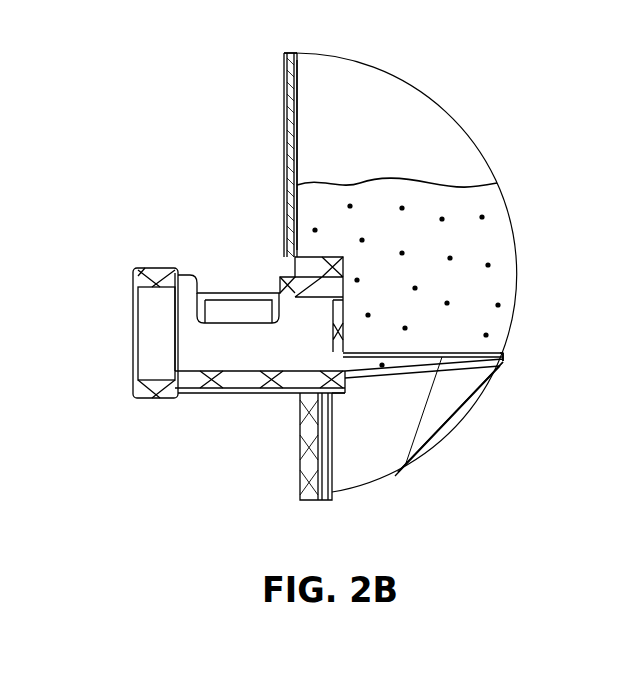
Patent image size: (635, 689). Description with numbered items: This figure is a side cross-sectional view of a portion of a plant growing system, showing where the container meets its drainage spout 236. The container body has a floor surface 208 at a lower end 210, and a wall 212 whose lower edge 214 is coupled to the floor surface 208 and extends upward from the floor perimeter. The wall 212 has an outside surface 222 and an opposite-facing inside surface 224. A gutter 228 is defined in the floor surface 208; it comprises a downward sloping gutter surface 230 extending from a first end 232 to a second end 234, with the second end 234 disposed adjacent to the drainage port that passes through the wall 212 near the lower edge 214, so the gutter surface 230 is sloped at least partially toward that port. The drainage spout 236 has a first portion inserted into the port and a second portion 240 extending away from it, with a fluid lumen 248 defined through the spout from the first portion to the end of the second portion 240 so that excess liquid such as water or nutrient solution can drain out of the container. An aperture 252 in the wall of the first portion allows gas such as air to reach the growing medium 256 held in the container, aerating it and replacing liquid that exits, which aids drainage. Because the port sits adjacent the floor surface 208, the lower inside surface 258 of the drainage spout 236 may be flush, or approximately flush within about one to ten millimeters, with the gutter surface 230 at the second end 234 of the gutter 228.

The floor surface 208 is at (495, 351).
The lower end 210 is at (522, 362).
The wall 212 is at (270, 141).
The lower edge 214 is at (420, 356).
The outside surface 222 is at (284, 53).
The inside surface 224 is at (297, 98).
The gutter 228 is at (393, 352).
The gutter surface 230 is at (442, 352).
The first end 232 is at (503, 375).
The second end 234 is at (342, 410).
The drainage spout 236 is at (198, 315).
The second portion 240 is at (140, 408).
The fluid lumen 248 is at (225, 390).
The aperture 252 is at (246, 276).
The growing medium 256 is at (425, 195).
The lower inside surface 258 is at (270, 372).